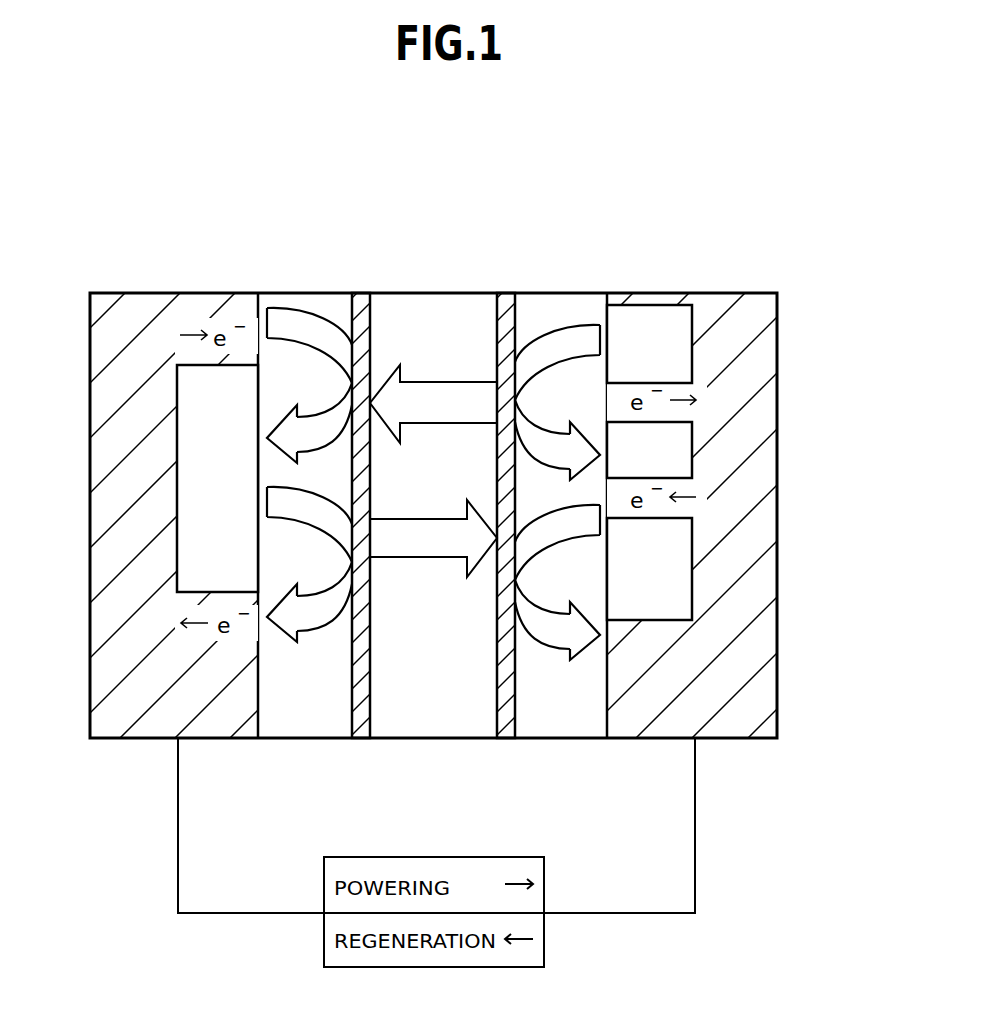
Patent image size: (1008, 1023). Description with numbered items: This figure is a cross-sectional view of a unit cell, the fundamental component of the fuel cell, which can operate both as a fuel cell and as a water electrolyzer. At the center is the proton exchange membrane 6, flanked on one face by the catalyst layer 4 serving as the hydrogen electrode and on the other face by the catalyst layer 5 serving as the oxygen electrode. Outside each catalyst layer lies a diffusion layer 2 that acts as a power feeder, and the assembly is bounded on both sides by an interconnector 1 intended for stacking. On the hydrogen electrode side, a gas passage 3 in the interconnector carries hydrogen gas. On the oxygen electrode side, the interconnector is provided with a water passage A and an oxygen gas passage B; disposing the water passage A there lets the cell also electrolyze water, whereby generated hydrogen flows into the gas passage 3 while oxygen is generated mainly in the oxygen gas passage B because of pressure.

The interconnector 1 is at (163, 293).
The diffusion layer 2 is at (305, 293).
The gas passage 3 is at (177, 475).
The catalyst layer (hydrogen electrode) 4 is at (352, 689).
The catalyst layer (oxygen electrode) 5 is at (497, 691).
The proton exchange membrane 6 is at (432, 738).
The water passage A is at (692, 336).
The oxygen gas passage B is at (692, 446).